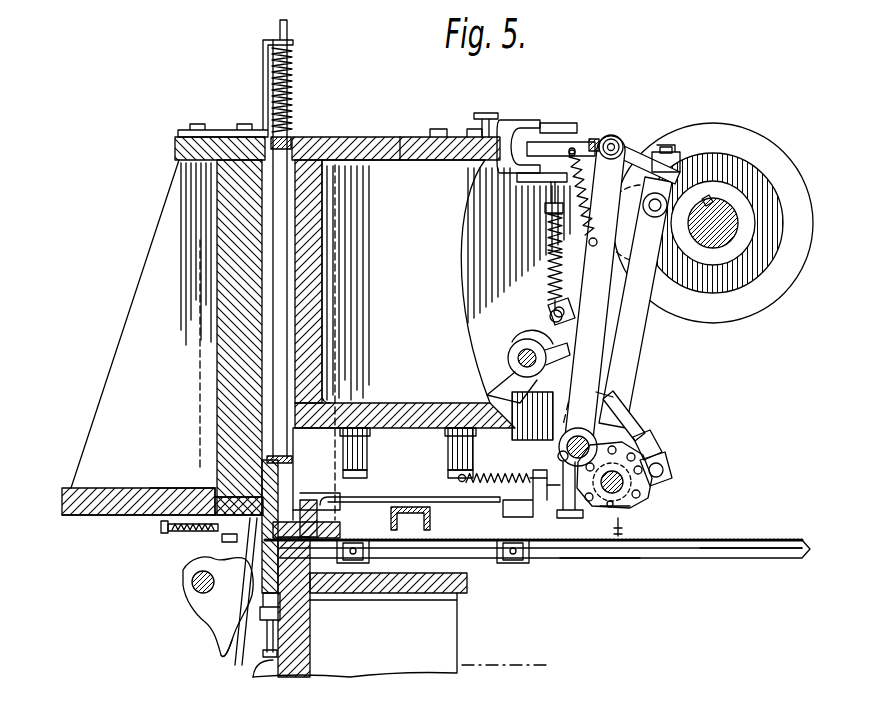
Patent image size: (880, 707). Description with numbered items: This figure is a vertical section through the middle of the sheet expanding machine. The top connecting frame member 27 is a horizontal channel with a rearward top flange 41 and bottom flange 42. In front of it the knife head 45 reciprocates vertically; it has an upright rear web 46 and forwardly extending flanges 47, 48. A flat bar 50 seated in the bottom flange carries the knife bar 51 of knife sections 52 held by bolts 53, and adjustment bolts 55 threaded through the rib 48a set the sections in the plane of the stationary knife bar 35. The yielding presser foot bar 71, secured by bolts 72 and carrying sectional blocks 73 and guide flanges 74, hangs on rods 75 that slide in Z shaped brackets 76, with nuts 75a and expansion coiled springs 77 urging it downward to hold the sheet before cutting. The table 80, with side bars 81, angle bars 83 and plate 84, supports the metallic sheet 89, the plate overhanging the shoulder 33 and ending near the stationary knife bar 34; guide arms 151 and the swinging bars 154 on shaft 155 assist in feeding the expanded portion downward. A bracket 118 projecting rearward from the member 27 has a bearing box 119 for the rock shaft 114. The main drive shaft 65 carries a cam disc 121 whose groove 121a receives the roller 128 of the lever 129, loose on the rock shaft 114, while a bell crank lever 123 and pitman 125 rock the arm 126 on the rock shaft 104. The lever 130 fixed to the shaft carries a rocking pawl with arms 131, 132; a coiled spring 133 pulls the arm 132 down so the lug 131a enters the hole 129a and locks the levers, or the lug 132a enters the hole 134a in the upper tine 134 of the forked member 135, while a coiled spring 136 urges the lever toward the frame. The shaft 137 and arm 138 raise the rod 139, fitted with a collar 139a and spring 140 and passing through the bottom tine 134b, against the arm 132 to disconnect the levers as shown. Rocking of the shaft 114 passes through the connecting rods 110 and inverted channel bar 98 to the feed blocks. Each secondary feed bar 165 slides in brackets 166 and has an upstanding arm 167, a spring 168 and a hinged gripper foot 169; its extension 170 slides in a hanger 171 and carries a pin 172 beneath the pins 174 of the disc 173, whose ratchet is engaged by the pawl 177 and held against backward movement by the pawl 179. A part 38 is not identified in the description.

The top connecting frame member 27 is at (352, 130).
The shoulder 33 is at (298, 565).
The stationary knife bar 34 is at (268, 617).
The stationary knife bar 35 is at (263, 587).
The adjusting bolt 38 is at (268, 655).
The top flange 41 is at (387, 140).
The bottom flange 42 is at (406, 427).
The knife head 45 is at (151, 229).
The upright rear web 46 is at (217, 277).
The top flange 47 is at (175, 146).
The bottom flange 48 is at (78, 486).
The longitudinal rib 48a is at (157, 517).
The flat bar 50 is at (213, 487).
The knife bar 51 is at (183, 492).
The knife sections 52 is at (207, 529).
The bolts 53 is at (225, 537).
The adjustment bolts 55 is at (162, 528).
The main drive shaft 65 is at (728, 208).
The presser foot bar 71 is at (292, 460).
The bolts 72 is at (280, 517).
The sectional blocks 73 is at (336, 475).
The guide flanges 74 is at (288, 517).
The vertical rods 75 is at (273, 373).
The nuts 75a is at (293, 140).
The Z shaped brackets 76 is at (263, 78).
The expansion coiled springs 77 is at (288, 113).
The table 80 is at (720, 526).
The side bars 81 is at (738, 554).
The angle bars 83 is at (358, 563).
The plate 84 is at (588, 556).
The metallic sheet 89 is at (548, 540).
The inverted channel bar 98 is at (422, 507).
The rock shaft 104 is at (640, 492).
The connecting rods 110 is at (307, 300).
The rock shaft 114 is at (613, 418).
The bracket 118 is at (484, 283).
The bearing box 119 is at (559, 447).
The cam disc 121 is at (820, 258).
The cam groove 121a is at (777, 228).
The bell crank lever 123 is at (551, 256).
The pitman 125 is at (629, 427).
The arm 126 is at (649, 477).
The roller 128 is at (760, 138).
The lever 129 is at (620, 341).
The hole 129a is at (659, 192).
The lever 130 is at (598, 360).
The pawl arm 131 is at (635, 157).
The lug 131a is at (672, 150).
The pawl arm 132 is at (585, 140).
The lug 132a is at (588, 128).
The coiled spring 133 is at (594, 197).
The upper tine 134 is at (532, 122).
The hole 134a is at (553, 123).
The bottom tine 134b is at (545, 205).
The forked member 135 is at (450, 127).
The coiled spring 136 is at (614, 136).
The shaft 137 is at (523, 354).
The arm 138 is at (547, 345).
The rod 139 is at (547, 214).
The collar 139a is at (547, 230).
The expansion coiled spring 140 is at (552, 276).
The guide arms 151 is at (236, 660).
The bars 154 is at (228, 636).
The shaft 155 is at (193, 585).
The feed bars 165 is at (385, 491).
The brackets 166 is at (381, 427).
The upstanding arm 167 is at (540, 477).
The coiled expansion spring 168 is at (460, 476).
The gripper foot 169 is at (317, 520).
The extension bar 170 is at (527, 510).
The hanger 171 is at (566, 516).
The pin 172 is at (628, 532).
The disc 173 is at (622, 498).
The pins 174 is at (668, 470).
The pawl 177 is at (650, 445).
The pawl 179 is at (558, 469).